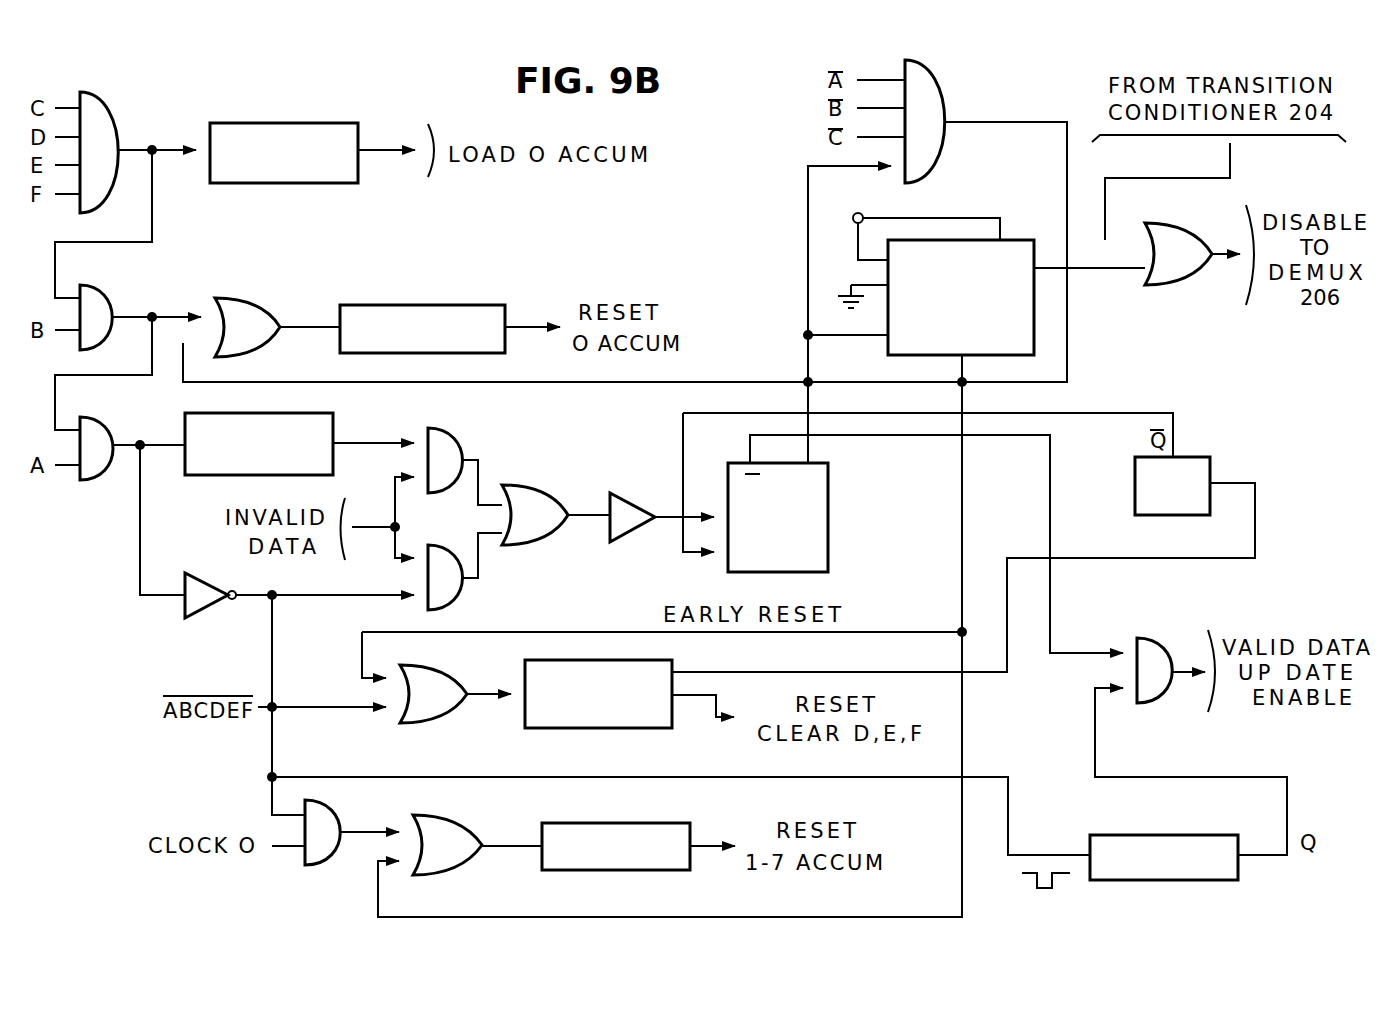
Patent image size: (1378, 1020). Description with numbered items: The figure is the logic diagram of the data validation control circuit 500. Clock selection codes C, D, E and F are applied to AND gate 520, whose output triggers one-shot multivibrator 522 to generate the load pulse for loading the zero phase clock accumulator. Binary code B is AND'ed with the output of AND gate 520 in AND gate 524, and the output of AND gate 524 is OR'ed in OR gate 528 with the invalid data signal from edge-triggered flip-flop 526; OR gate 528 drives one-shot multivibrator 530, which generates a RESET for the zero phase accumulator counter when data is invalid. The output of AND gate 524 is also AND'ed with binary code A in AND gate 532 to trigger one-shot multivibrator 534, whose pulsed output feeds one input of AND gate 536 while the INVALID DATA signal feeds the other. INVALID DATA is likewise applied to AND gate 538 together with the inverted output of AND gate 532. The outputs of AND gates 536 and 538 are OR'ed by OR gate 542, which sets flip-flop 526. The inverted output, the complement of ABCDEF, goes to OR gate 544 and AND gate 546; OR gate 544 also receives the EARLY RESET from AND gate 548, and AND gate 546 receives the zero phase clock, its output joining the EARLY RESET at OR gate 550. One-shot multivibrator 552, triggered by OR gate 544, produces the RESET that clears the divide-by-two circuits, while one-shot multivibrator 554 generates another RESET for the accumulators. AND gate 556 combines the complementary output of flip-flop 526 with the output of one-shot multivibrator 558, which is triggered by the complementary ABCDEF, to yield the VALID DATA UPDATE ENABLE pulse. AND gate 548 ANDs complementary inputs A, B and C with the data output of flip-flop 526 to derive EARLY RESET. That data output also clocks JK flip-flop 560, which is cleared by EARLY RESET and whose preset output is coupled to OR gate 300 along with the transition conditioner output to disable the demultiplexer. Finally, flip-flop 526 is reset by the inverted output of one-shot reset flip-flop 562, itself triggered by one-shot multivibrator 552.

The AND gate 520 is at (100, 98).
The one-shot multivibrator 522 is at (262, 123).
The AND gate 524 is at (108, 296).
The edge-triggered flip-flop 526 is at (828, 508).
The OR gate 528 is at (243, 298).
The one-shot multivibrator 530 is at (400, 305).
The AND gate 532 is at (90, 480).
The one-shot multivibrator 534 is at (320, 413).
The AND gate 536 is at (455, 440).
The AND gate 538 is at (458, 592).
The OR gate 542 is at (538, 487).
The OR gate 544 is at (412, 722).
The AND gate 546 is at (330, 815).
The AND gate 548 is at (935, 90).
The OR gate 550 is at (470, 866).
The one-shot multivibrator 552 is at (553, 728).
The one-shot multivibrator 554 is at (585, 823).
The AND gate 556 is at (1158, 612).
The one-shot multivibrator 558 is at (1110, 835).
The JK flip-flop 560 is at (1025, 240).
The one-shot reset flip-flop 562 is at (1198, 457).
The OR gate 300 is at (1180, 284).
The data validation control counter circuit 500 is at (288, 886).